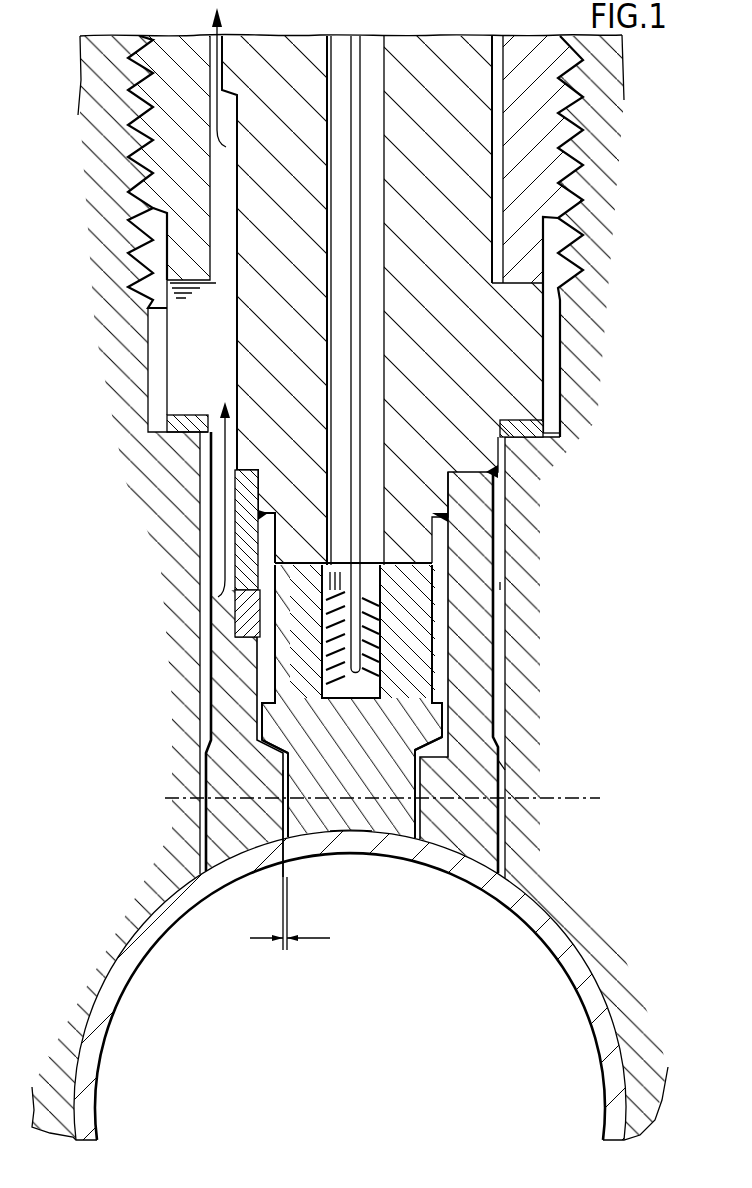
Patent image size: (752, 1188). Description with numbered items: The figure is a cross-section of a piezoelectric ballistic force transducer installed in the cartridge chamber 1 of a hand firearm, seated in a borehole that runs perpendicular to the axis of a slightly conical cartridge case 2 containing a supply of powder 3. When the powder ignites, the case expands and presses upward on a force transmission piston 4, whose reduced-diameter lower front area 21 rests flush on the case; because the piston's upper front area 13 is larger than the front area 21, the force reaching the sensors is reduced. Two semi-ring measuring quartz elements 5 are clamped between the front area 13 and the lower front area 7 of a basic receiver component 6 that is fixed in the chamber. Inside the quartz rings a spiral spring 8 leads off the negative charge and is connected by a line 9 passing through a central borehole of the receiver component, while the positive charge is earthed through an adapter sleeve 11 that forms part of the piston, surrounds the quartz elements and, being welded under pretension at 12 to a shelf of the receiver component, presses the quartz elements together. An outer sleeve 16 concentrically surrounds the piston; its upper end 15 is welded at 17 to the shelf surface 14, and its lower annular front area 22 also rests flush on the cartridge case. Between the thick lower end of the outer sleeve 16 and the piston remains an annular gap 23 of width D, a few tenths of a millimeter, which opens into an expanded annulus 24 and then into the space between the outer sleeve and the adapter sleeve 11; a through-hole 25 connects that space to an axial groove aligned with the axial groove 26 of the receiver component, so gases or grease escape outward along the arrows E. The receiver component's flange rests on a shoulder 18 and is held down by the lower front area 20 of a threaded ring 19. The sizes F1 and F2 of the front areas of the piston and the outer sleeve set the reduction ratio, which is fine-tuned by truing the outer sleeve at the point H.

The cartridge chamber 1 is at (520, 856).
The cartridge case 2 is at (542, 927).
The supply of powder 3 is at (563, 1007).
The force transmission piston 4 is at (405, 787).
The measuring quartz elements 5 is at (273, 678).
The basic receiver component 6 is at (523, 340).
The lower front area 7 is at (407, 556).
The spiral spring 8 is at (375, 620).
The line 9 is at (368, 100).
The adapter sleeve 11 is at (267, 653).
The weld point of adapter sleeve 12 is at (262, 513).
The upper front area 13 is at (283, 710).
The shelf surface 14 is at (473, 459).
The upper end of outer sleeve 15 is at (467, 493).
The outer sleeve 16 is at (473, 727).
The weld point of outer sleeve 17 is at (500, 474).
The shoulder 18 is at (562, 427).
The threaded ring 19 is at (175, 147).
The lower front area of threaded ring 20 is at (181, 272).
The lower front area 21 is at (352, 835).
The annular front area 22 is at (250, 848).
The annular gap 23 is at (255, 818).
The expanded annulus 24 is at (275, 758).
The through-hole 25 is at (243, 600).
The axial groove 26 is at (188, 330).
The escape arrows E is at (118, 456).
The annular gap width D is at (290, 913).
The front area size of force transmission piston F1 is at (505, 765).
The front area size of outer sleeve F2 is at (255, 798).
The truing point H is at (500, 582).